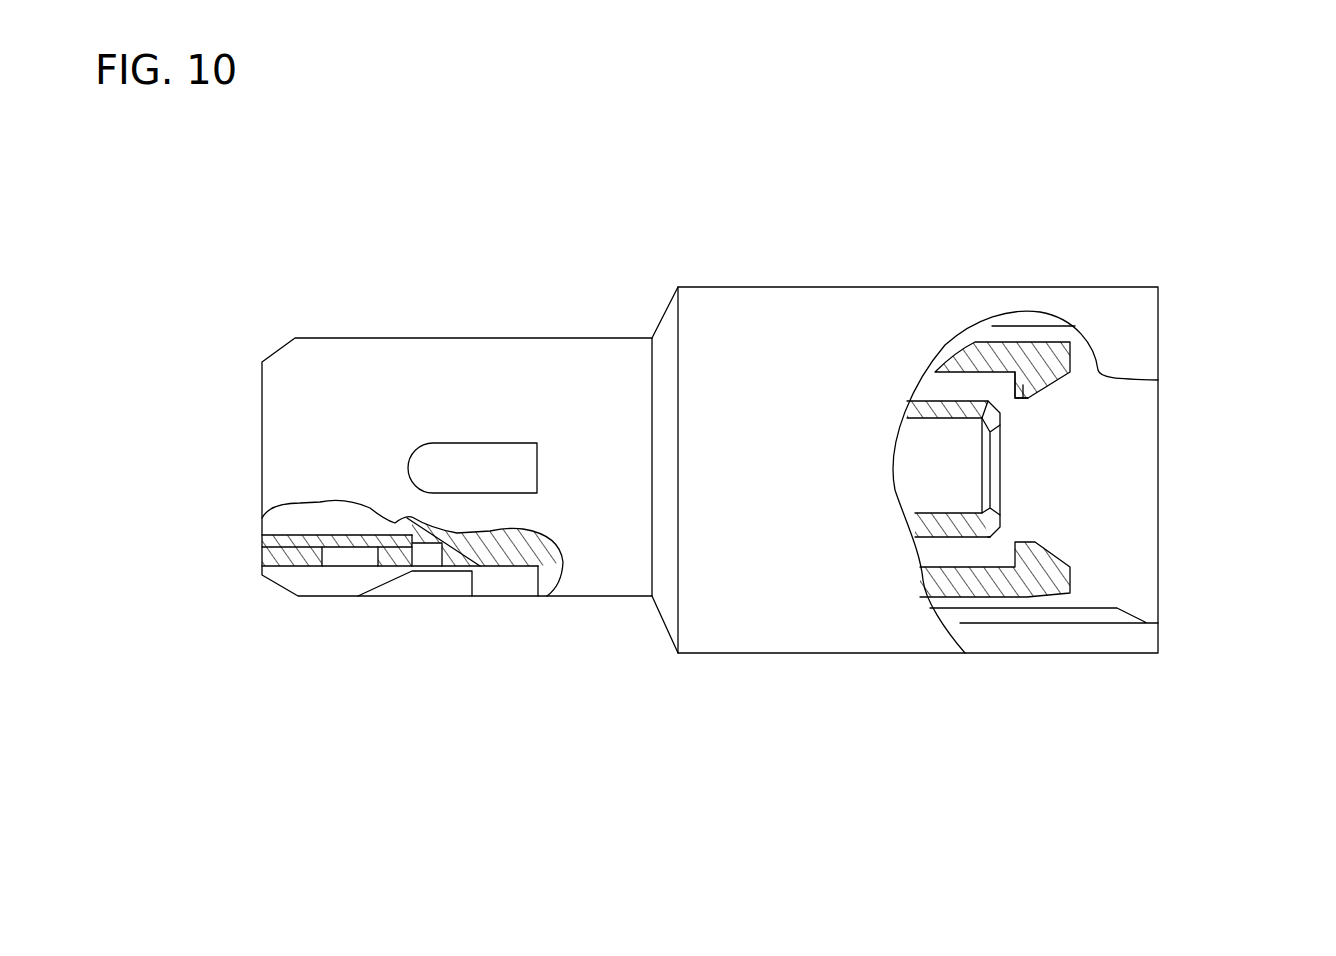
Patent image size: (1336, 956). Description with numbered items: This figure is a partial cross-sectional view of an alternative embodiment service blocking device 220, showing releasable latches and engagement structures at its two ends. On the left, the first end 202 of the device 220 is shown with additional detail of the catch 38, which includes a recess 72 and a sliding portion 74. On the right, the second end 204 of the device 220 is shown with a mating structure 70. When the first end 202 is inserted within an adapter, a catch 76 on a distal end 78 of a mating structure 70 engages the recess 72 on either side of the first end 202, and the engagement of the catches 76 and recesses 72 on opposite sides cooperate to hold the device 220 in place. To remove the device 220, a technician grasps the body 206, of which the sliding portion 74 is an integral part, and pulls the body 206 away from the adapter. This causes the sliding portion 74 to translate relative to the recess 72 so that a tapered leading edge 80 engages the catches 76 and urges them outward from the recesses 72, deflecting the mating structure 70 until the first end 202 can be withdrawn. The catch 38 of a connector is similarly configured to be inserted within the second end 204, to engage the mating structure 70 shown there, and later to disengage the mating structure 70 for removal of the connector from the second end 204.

The device 220 is at (691, 266).
The first end 202 is at (286, 379).
The body 206 is at (796, 305).
The second end 204 is at (1130, 322).
The distal end 78 is at (1043, 362).
The catch 76 is at (1028, 398).
The mating structure 70 is at (1028, 463).
The sliding portion 74 is at (316, 590).
The tapered leading edge 80 is at (376, 585).
The recess 72 is at (484, 588).
The catch 38 is at (506, 590).